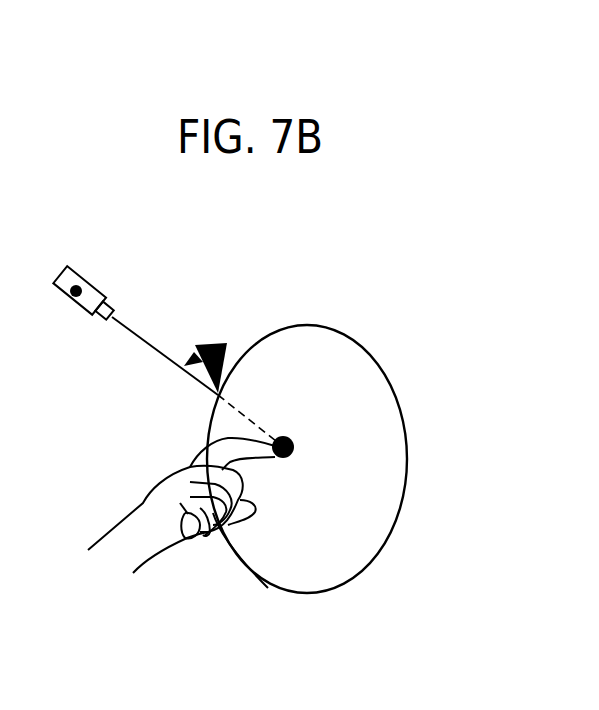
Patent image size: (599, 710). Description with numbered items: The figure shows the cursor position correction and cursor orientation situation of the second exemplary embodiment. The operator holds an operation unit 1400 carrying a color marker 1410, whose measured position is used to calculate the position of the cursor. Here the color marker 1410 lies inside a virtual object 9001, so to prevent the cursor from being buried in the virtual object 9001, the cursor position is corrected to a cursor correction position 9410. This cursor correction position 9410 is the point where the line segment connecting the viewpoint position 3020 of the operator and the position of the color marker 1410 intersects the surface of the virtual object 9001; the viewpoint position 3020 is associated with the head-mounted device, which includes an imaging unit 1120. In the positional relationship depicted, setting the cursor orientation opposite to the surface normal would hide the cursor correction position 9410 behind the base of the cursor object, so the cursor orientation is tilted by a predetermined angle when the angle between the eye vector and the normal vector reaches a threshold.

The imaging unit 1120 is at (108, 300).
The viewpoint position 3020 is at (73, 296).
The virtual object 9001 is at (326, 325).
The cursor correction position 9410 is at (216, 397).
The color marker 1410 is at (294, 451).
The operation unit 1400 is at (190, 543).